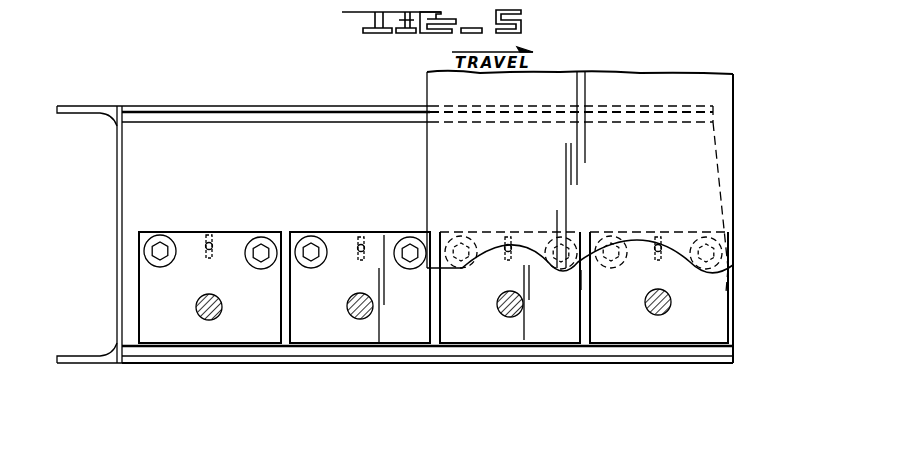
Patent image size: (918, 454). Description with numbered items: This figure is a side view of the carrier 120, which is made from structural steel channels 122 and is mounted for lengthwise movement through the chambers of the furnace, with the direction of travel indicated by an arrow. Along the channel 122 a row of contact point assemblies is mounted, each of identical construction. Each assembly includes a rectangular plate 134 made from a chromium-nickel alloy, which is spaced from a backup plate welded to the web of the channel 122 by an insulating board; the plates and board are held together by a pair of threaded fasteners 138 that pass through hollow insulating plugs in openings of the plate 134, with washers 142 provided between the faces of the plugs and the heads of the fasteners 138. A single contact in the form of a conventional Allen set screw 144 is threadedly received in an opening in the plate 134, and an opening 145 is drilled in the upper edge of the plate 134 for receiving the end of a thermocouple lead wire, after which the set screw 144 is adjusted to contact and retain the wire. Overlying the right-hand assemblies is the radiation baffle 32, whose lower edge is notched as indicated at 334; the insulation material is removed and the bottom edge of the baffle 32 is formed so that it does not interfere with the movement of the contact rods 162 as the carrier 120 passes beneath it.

The radiation baffle 32 is at (584, 217).
The carrier 120 is at (389, 257).
The structural steel channel 122 is at (117, 125).
The second plate 134 is at (150, 299).
The threaded fastener 138 is at (155, 254).
The washer 142 is at (148, 243).
The Allen set screw 144 is at (206, 244).
The opening 145 is at (211, 234).
The contact rod 162 is at (196, 311).
The notch 334 is at (686, 262).